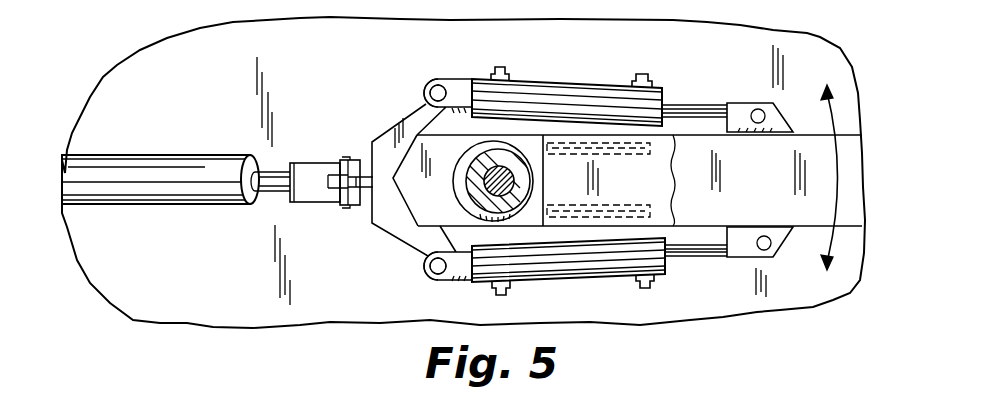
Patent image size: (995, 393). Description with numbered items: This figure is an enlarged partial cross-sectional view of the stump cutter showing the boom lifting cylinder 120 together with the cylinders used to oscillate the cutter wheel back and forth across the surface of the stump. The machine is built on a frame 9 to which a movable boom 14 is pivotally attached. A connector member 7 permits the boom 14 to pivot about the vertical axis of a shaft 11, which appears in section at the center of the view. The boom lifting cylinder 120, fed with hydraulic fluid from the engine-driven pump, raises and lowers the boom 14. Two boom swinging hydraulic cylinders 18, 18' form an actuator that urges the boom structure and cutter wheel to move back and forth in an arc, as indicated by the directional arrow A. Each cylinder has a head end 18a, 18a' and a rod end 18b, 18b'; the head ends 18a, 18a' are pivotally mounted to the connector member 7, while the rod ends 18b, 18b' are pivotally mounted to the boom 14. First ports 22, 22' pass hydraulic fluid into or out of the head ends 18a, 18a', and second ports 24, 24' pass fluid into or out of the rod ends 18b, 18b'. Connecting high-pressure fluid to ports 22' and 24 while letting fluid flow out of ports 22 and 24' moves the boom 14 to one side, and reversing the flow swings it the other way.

The frame 9 is at (227, 312).
The boom lifting cylinder 120 is at (146, 157).
The connector member 7 is at (422, 212).
The boom 14 is at (847, 172).
The shaft 11 is at (493, 182).
The hydraulic cylinder 18 is at (567, 78).
The head end 18a is at (444, 67).
The rod end 18b is at (727, 88).
The first port 22 is at (520, 50).
The second port 24 is at (664, 56).
The hydraulic cylinder 18' is at (568, 299).
The head end 18a' is at (425, 306).
The rod end 18b' is at (729, 288).
The first port 22' is at (535, 299).
The second port 24' is at (679, 292).
The directional arrow A is at (833, 110).